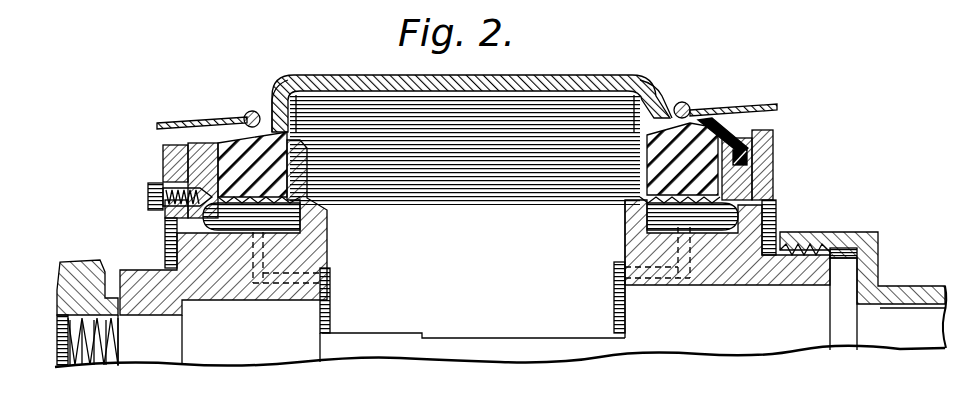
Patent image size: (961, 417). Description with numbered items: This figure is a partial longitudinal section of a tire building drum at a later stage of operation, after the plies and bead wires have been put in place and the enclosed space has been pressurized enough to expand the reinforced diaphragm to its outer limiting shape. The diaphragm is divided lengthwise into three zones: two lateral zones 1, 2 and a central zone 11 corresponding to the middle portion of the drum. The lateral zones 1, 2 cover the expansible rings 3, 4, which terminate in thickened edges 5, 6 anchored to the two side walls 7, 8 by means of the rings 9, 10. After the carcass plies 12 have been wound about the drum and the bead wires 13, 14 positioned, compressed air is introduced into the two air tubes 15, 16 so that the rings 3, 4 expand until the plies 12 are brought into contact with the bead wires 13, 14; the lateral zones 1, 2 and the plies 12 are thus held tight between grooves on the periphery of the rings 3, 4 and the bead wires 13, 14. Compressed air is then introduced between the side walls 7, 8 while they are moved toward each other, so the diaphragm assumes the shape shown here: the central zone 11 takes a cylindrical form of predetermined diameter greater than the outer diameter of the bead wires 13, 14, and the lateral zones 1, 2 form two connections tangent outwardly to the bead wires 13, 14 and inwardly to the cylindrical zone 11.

The lateral zone 1 is at (273, 110).
The lateral zone 2 is at (665, 98).
The expansible ring 3 is at (230, 132).
The expansible ring 4 is at (702, 124).
The thickened edge 5 is at (161, 166).
The thickened edge 6 is at (747, 157).
The side wall 7 is at (190, 256).
The side wall 8 is at (778, 214).
The ring 9 is at (165, 157).
The ring 10 is at (773, 133).
The central zone 11 is at (392, 74).
The carcass plies 12 is at (746, 105).
The bead wire 13 is at (251, 112).
The bead wire 14 is at (687, 104).
The air tube 15 is at (168, 232).
The air tube 16 is at (752, 186).